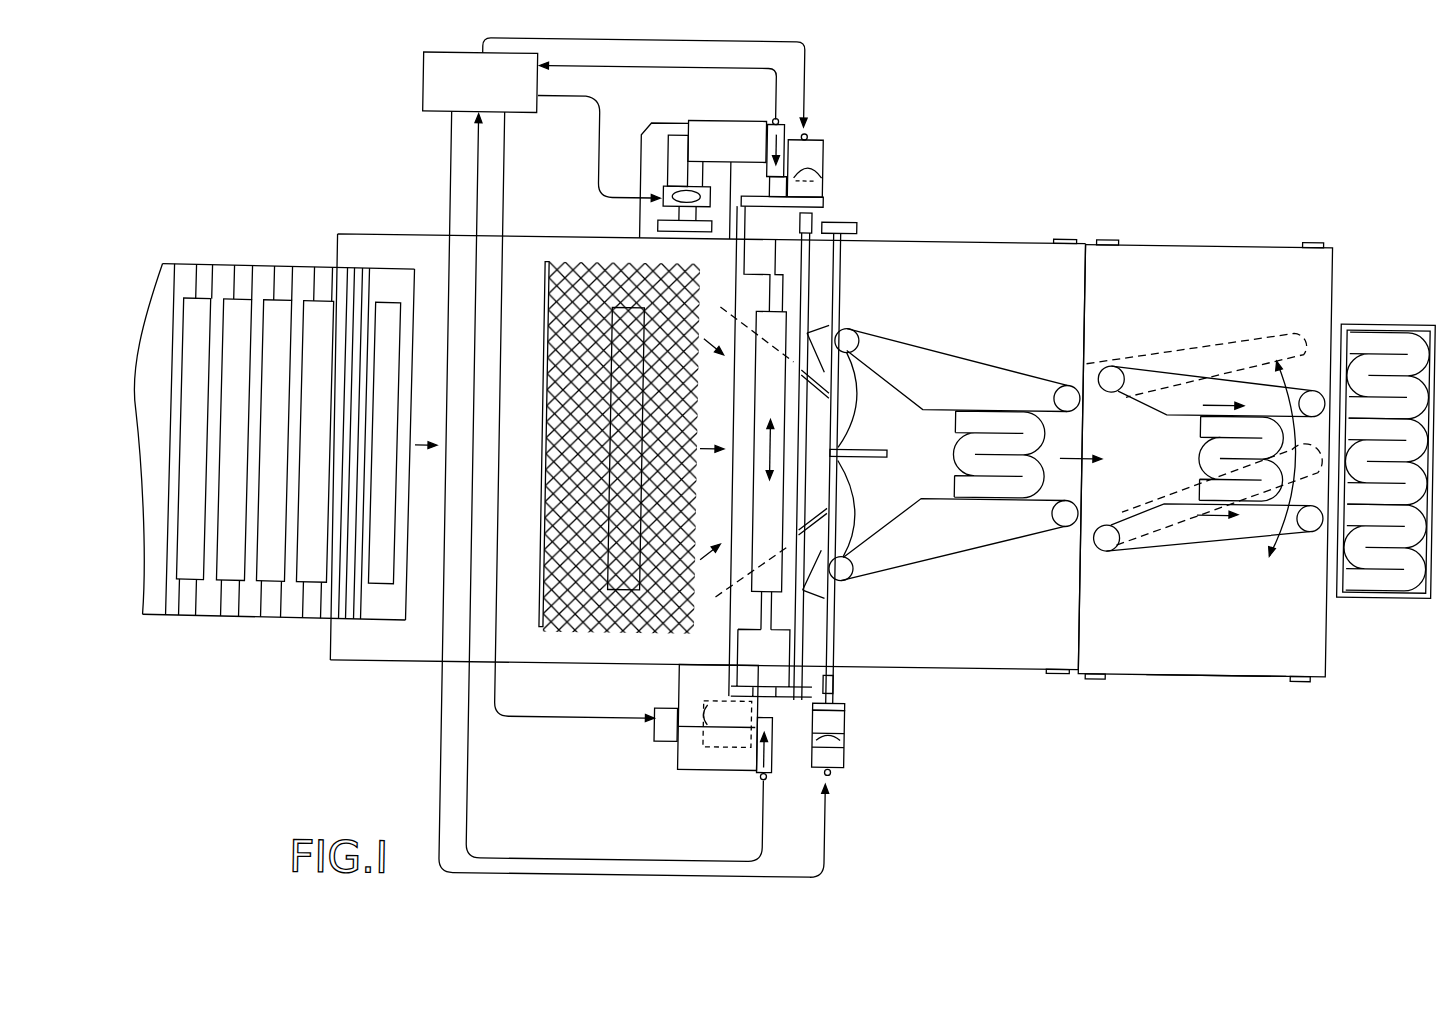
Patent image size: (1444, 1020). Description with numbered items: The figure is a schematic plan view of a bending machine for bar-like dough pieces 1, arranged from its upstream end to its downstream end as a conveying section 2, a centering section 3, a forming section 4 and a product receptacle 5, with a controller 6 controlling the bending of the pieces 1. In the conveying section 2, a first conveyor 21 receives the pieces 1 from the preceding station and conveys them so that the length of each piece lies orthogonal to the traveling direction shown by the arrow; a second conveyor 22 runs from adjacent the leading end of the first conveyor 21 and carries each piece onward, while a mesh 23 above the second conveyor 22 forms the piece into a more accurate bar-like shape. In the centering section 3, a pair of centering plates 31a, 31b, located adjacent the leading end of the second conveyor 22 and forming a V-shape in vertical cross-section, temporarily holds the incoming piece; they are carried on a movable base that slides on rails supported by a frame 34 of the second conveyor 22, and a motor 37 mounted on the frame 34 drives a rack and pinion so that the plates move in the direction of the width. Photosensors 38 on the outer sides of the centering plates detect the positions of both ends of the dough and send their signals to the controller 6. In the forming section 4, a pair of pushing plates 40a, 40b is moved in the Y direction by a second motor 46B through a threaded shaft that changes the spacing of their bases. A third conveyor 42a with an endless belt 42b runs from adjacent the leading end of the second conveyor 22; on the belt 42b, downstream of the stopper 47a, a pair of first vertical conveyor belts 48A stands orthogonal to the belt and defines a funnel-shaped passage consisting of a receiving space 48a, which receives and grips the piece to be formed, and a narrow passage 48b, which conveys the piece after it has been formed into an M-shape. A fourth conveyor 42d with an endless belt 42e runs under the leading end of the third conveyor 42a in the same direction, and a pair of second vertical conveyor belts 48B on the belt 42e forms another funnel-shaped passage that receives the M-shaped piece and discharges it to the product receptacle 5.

The bar-like dough piece 1 is at (321, 306).
The conveying section 2 is at (411, 238).
The centering section 3 is at (828, 182).
The forming section 4 is at (1252, 240).
The product receptacle 5 is at (1399, 316).
The controller 6 is at (480, 82).
The first conveyor 21 is at (181, 278).
The second conveyor 22 is at (406, 666).
The mesh 23 is at (560, 268).
The centering plate 31a is at (748, 614).
The centering plate 31b is at (783, 615).
The frame 34 is at (810, 210).
The motor 37 is at (659, 735).
The photosensors 38 is at (762, 129).
The pushing plate 40a is at (842, 350).
The pushing plate 40b is at (845, 556).
The third conveyor 42a is at (966, 239).
The endless belt 42b is at (1015, 245).
The fourth conveyor 42d is at (1210, 674).
The endless belt 42e is at (1135, 670).
The second motor 46B is at (673, 160).
The stopper 47a is at (870, 458).
The receiving space 48a is at (898, 412).
The first vertical conveyor belts 48A is at (983, 550).
The narrow passage 48b is at (1069, 429).
The second vertical conveyor belts 48B is at (1201, 543).